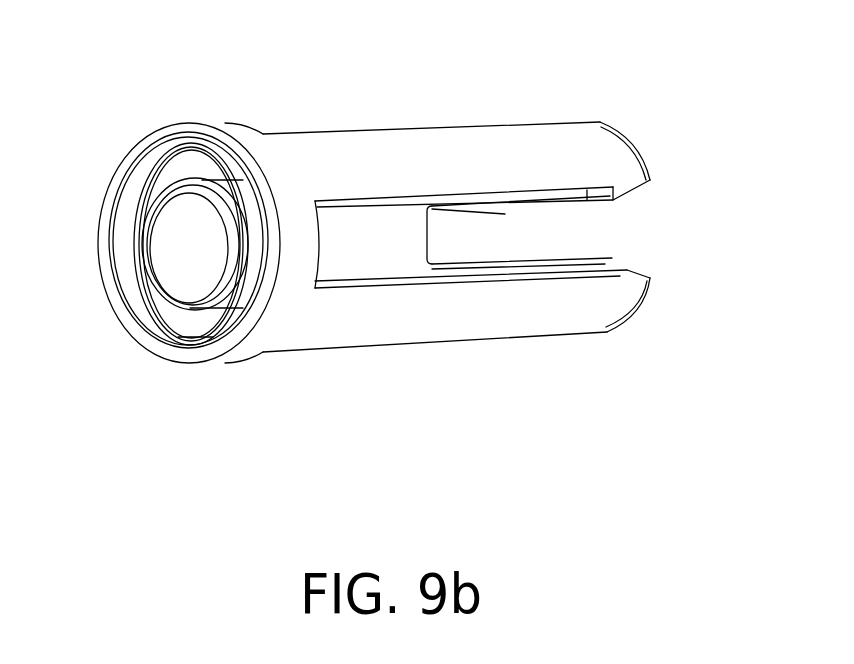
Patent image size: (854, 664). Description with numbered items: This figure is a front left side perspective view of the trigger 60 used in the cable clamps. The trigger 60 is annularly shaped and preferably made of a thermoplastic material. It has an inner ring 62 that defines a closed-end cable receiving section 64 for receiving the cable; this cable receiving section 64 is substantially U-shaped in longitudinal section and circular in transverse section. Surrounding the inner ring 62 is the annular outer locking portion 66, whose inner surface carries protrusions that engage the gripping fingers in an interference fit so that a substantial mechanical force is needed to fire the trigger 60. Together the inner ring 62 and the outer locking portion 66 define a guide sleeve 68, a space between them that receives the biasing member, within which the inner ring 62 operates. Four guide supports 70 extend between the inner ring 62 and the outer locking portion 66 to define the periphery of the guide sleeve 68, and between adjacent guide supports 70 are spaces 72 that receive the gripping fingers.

The trigger 60 is at (434, 96).
The inner ring 62 is at (195, 158).
The cable receiving section 64 is at (177, 230).
The outer locking portion 66 is at (298, 183).
The guide sleeve 68 is at (615, 265).
The guide supports 70 is at (547, 152).
The spaces 72 is at (400, 260).